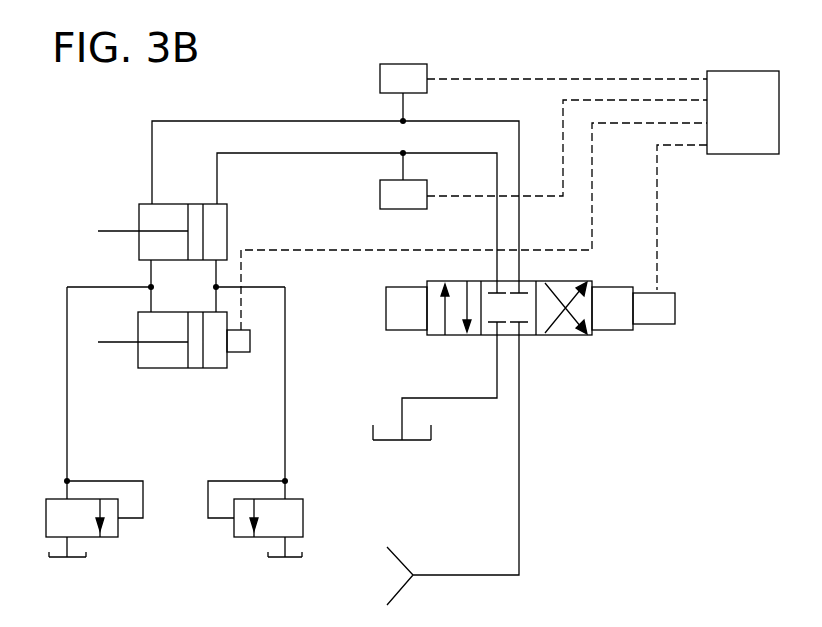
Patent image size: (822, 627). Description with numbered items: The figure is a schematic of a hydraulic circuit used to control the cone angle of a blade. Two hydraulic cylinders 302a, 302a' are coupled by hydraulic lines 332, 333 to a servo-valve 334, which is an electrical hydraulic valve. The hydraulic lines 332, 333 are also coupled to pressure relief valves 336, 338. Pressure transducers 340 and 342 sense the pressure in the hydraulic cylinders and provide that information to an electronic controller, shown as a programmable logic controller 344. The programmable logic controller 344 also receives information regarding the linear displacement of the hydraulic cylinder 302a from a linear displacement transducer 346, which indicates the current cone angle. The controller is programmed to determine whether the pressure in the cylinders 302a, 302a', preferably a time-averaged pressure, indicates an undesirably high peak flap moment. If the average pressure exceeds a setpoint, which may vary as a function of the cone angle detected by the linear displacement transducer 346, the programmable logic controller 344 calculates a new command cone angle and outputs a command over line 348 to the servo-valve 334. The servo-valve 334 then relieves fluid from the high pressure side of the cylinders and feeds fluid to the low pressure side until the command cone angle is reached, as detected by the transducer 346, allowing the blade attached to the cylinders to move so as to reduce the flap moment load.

The hydraulic line 332 is at (218, 121).
The hydraulic line 333 is at (256, 153).
The hydraulic cylinder 302a is at (148, 212).
The hydraulic cylinder 302a' is at (151, 334).
The linear displacement transducer 346 is at (240, 353).
The pressure relief valve 336 is at (104, 479).
The pressure relief valve 338 is at (296, 497).
The pressure transducer 340 is at (380, 78).
The pressure transducer 342 is at (380, 195).
The programmable logic controller 344 is at (722, 71).
The command line 348 is at (657, 228).
The servo-valve 334 is at (565, 337).